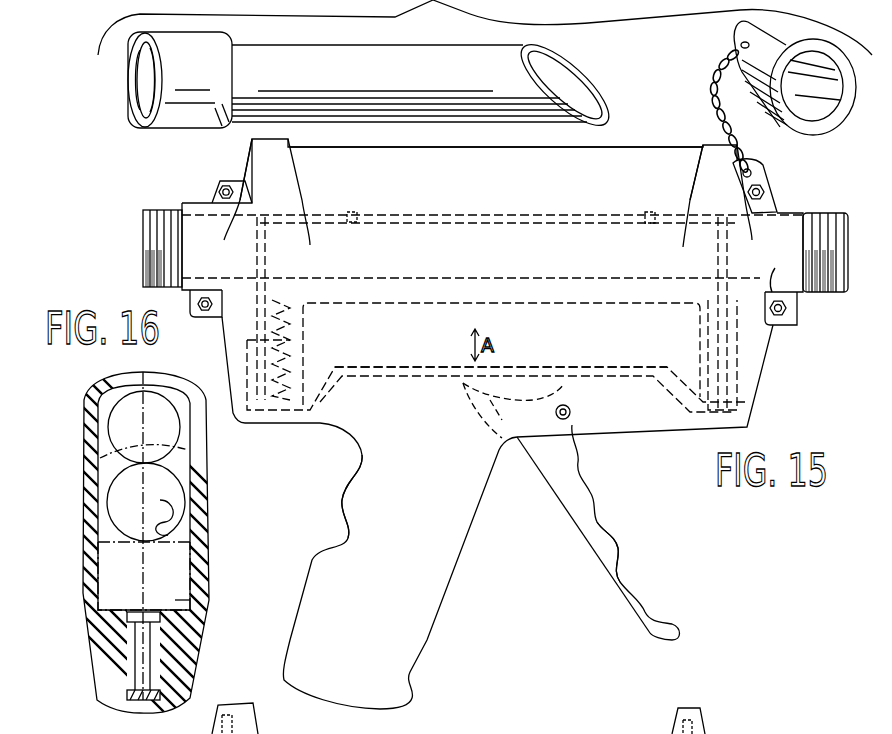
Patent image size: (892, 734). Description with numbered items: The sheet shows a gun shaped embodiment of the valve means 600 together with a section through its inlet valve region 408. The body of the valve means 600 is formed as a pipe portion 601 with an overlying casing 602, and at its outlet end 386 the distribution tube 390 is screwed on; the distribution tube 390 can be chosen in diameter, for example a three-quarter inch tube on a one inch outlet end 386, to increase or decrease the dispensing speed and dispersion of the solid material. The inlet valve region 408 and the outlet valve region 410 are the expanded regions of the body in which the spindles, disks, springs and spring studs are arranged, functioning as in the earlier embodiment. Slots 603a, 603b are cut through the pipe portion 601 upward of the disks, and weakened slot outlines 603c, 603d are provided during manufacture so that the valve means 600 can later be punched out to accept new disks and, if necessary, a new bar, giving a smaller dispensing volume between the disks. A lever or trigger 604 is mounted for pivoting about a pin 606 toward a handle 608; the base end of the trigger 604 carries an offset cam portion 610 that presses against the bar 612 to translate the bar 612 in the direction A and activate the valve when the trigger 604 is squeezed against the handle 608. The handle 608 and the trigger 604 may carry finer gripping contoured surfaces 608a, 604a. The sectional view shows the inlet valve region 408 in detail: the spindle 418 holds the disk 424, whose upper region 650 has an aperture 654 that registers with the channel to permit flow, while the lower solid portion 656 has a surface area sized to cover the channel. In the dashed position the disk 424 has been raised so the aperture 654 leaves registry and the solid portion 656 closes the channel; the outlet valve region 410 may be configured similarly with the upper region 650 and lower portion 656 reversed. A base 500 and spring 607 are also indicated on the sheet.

In FIG. 15, the distribution tube 390 is at (345, 66).
In FIG. 15, the outlet end 386 is at (815, 212).
In FIG. 15, the pipe portion 601 is at (437, 214).
In FIG. 15, the casing 602 is at (597, 147).
In FIG. 15, the slot 603a is at (258, 215).
In FIG. 15, the slot 603b is at (722, 214).
In FIG. 15, the weakened slot outline 603c is at (352, 212).
In FIG. 15, the weakened slot outline 603d is at (648, 214).
In FIG. 15, the bar 612 is at (549, 367).
In FIG. 15, the pin 606 is at (570, 424).
In FIG. 15, the offset cam portion 610 is at (498, 440).
In FIG. 15, the valve means 600 is at (509, 498).
In FIG. 15, the handle 608 is at (415, 620).
In FIG. 15, the gripping contoured surface 608a is at (308, 575).
In FIG. 15, the lever or trigger 604 is at (588, 518).
In FIG. 15, the gripping contoured surface 604a is at (640, 546).
In FIG. 15, the outlet valve region 410 is at (680, 710).
In FIG. 16, the inlet valve region 408 is at (223, 707).
In FIG. 15, the base 500 is at (608, 723).
In FIG. 16, the disk 424 is at (98, 426).
In FIG. 16, the aperture 654 is at (172, 400).
In FIG. 16, the upper region 650 is at (188, 515).
In FIG. 16, the spring 607 is at (178, 525).
In FIG. 16, the lower solid portion 656 is at (177, 567).
In FIG. 16, the spindle 418 is at (143, 657).